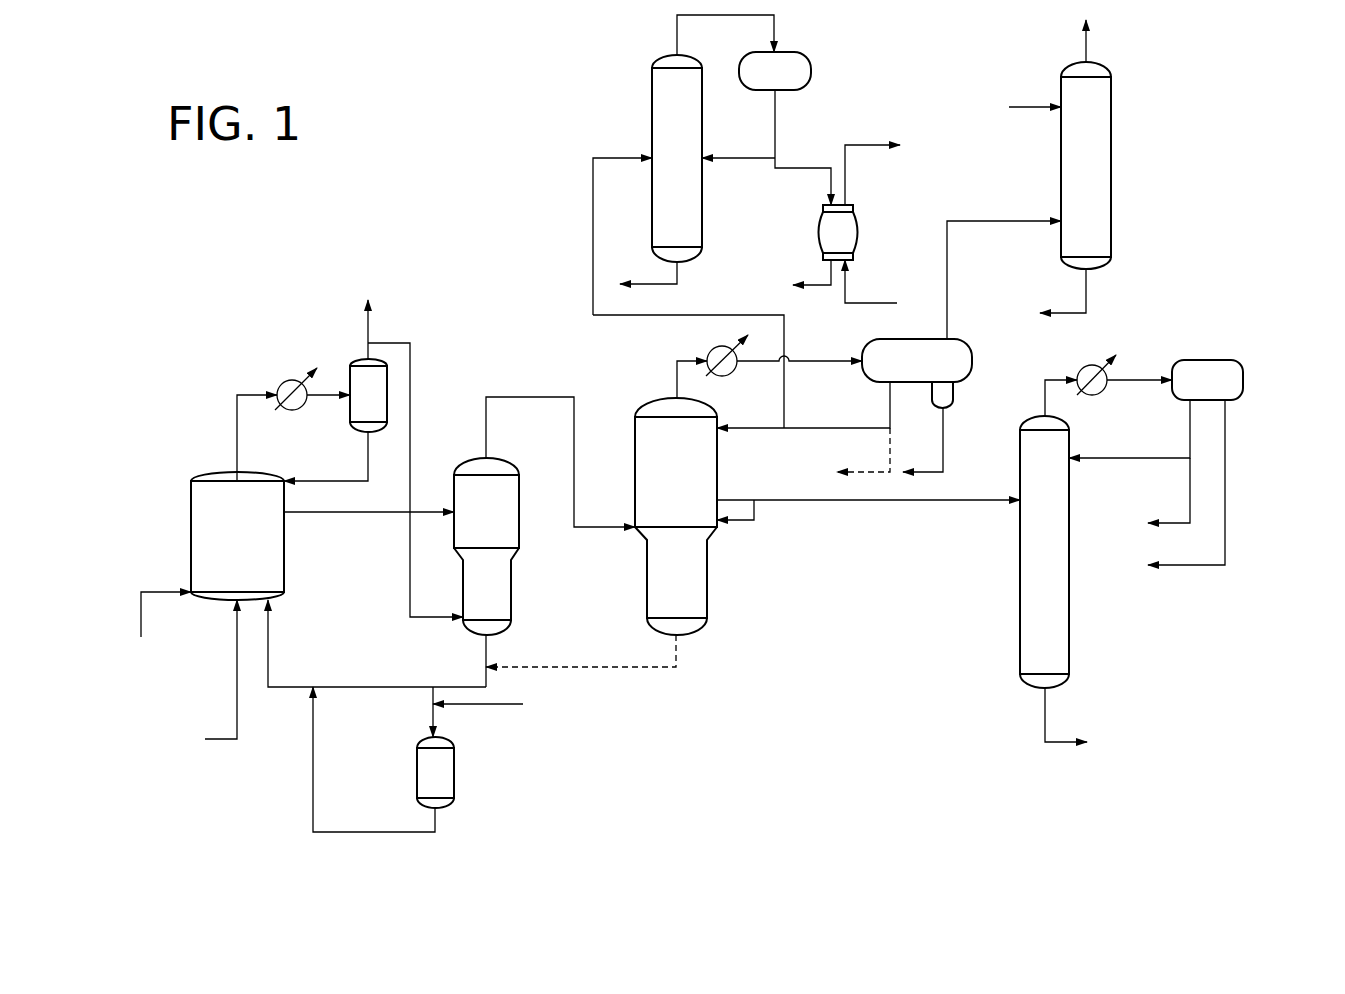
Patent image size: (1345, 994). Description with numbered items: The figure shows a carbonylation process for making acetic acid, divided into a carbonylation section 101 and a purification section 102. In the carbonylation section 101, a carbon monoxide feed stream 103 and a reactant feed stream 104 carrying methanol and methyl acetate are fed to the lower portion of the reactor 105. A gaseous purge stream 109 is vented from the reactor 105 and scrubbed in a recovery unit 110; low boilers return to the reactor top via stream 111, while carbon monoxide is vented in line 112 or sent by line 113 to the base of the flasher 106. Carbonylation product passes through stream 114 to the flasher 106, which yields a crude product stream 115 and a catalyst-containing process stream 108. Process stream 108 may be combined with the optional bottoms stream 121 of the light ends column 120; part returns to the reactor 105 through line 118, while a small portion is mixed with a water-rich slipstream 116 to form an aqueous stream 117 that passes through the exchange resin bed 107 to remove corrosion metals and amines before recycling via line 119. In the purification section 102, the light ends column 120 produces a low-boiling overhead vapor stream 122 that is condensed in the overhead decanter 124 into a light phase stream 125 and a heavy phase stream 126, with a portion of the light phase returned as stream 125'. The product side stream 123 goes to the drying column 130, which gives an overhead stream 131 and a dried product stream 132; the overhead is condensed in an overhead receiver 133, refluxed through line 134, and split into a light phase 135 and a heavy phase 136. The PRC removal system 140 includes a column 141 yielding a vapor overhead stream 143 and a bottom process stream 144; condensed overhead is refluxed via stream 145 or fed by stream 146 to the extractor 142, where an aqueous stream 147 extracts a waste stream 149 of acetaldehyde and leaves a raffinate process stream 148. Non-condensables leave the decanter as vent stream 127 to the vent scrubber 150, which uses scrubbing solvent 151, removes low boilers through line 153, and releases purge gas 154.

The carbonylation section 101 is at (237, 338).
The purification section 102 is at (857, 659).
The carbon monoxide feed stream 103 is at (140, 608).
The reactant feed stream 104 is at (220, 740).
The reactor 105 is at (212, 528).
The flasher 106 is at (493, 592).
The exchange resin bed 107 is at (435, 776).
The catalyst solution process stream 108 is at (487, 653).
The gaseous purge stream 109 is at (237, 422).
The recovery unit 110 is at (372, 400).
The return stream 111 is at (340, 480).
The vent line 112 is at (367, 327).
The carbon monoxide line to flasher 113 is at (395, 342).
The carbonylation product stream 114 is at (340, 513).
The crude product stream 115 is at (532, 392).
The slipstream 116 is at (497, 707).
The aqueous stream 117 is at (432, 710).
The bypass line 118 is at (347, 686).
The recycle line 119 is at (362, 830).
The light ends column 120 is at (697, 592).
The bottoms stream 121 is at (603, 668).
The low-boiling overhead vapor stream 122 is at (680, 360).
The product side stream 123 is at (802, 502).
The overhead decanter 124 is at (960, 355).
The light phase stream 125 is at (803, 405).
The light phase return stream 125' is at (824, 450).
The heavy phase stream 126 is at (942, 437).
The vent stream 127 is at (988, 220).
The drying column 130 is at (1055, 621).
The overhead stream 131 is at (1060, 380).
The dried product stream 132 is at (1052, 743).
The overhead receiver 133 is at (1208, 375).
The reflux line 134 is at (1123, 457).
The light phase 135 is at (1190, 495).
The heavy phase 136 is at (1225, 497).
The PRC removal system 140 is at (593, 137).
The column 141 is at (672, 190).
The extractor 142 is at (843, 232).
The vapor overhead stream 143 is at (677, 33).
The bottom process stream 144 is at (642, 283).
The reflux stream 145 is at (745, 160).
The extractor feed stream 146 is at (806, 167).
The aqueous stream 147 is at (875, 302).
The raffinate process stream 148 is at (823, 287).
The waste stream 149 is at (867, 145).
The vent scrubber 150 is at (1092, 163).
The scrubbing solvent 151 is at (1025, 107).
The low boiling point components line 153 is at (1085, 293).
The purge gas 154 is at (1087, 47).